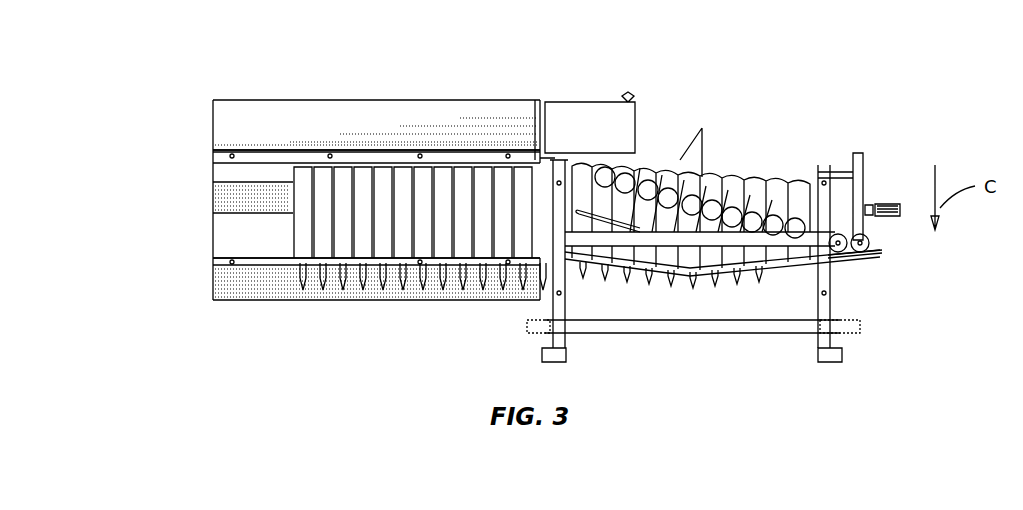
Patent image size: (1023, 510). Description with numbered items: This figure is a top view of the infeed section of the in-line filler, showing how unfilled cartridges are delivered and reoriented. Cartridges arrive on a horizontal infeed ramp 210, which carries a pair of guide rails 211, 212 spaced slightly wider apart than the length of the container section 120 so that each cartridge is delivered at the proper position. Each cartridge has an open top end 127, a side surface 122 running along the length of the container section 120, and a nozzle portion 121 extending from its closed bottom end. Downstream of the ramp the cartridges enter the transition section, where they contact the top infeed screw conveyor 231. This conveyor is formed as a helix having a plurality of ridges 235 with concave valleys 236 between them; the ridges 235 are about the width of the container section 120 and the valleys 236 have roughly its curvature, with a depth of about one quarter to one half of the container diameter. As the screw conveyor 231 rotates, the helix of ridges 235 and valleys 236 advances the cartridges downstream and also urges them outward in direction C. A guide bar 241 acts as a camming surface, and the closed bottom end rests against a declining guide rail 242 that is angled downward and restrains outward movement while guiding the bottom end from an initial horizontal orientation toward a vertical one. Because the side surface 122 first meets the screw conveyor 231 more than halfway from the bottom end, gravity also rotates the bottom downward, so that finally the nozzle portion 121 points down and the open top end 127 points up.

The infeed ramp 210 is at (312, 115).
The guide rail 211 is at (214, 266).
The guide rail 212 is at (214, 152).
The side surface 122 is at (300, 232).
The container section 120 is at (742, 178).
The nozzle portion 121 is at (647, 287).
The open top end 127 is at (798, 170).
The top infeed screw conveyor 231 is at (770, 185).
The ridges 235 is at (668, 150).
The concave valleys 236 is at (696, 141).
The guide bar 241 is at (728, 278).
The declining guide rail 242 is at (748, 280).